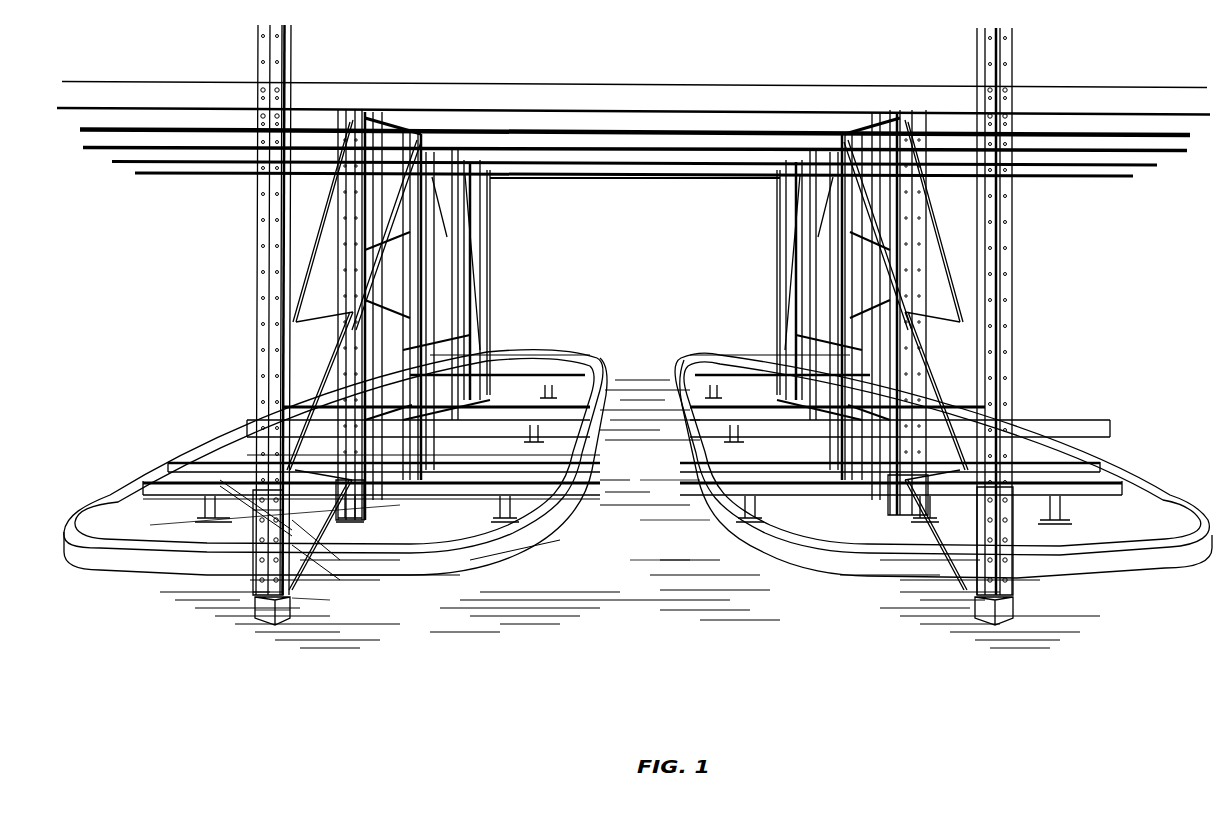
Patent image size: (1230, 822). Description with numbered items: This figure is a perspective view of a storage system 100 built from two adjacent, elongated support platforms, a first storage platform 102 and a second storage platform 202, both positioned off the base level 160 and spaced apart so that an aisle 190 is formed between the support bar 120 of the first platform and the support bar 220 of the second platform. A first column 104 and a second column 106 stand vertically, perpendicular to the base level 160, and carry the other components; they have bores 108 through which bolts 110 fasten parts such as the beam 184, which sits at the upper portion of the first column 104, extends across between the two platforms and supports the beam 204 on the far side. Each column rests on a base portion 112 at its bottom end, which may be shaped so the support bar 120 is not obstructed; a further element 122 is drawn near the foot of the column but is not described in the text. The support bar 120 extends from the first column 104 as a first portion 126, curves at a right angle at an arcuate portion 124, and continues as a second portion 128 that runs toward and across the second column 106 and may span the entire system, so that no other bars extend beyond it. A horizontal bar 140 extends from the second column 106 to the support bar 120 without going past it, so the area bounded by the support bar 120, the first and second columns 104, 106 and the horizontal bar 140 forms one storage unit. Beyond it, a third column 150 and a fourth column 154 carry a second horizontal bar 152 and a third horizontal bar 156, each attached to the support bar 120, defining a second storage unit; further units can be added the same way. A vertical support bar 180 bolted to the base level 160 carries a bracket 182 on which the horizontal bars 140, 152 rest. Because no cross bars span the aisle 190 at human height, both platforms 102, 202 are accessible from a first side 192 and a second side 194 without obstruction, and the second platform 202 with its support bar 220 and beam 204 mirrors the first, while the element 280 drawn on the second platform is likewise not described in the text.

The storage system 100 is at (384, 711).
The first storage platform 102 is at (351, 501).
The first column 104 is at (215, 215).
The second column 106 is at (352, 262).
The bores 108 is at (262, 584).
The bolts 110 is at (292, 590).
The base portion 112 is at (270, 615).
The support bar 120 is at (547, 533).
The base plate 122 is at (292, 600).
The arcuate portion 124 is at (530, 556).
The first portion 126 is at (402, 568).
The second portion 128 is at (595, 443).
The horizontal bar 140 is at (527, 490).
The third column 150 is at (410, 240).
The second horizontal bar 152 is at (540, 470).
The fourth column 154 is at (410, 267).
The third horizontal bar 156 is at (601, 372).
The base level 160 is at (220, 688).
The vertical support bar 180 is at (235, 536).
The bracket 182 is at (185, 512).
The beam 184 is at (572, 100).
The aisle 190 is at (671, 467).
The first side 192 is at (663, 563).
The second side 194 is at (638, 339).
The second storage platform 202 is at (1125, 609).
The beam 204 is at (1005, 300).
The support bar 220 is at (735, 555).
The second support foot 280 is at (1050, 510).